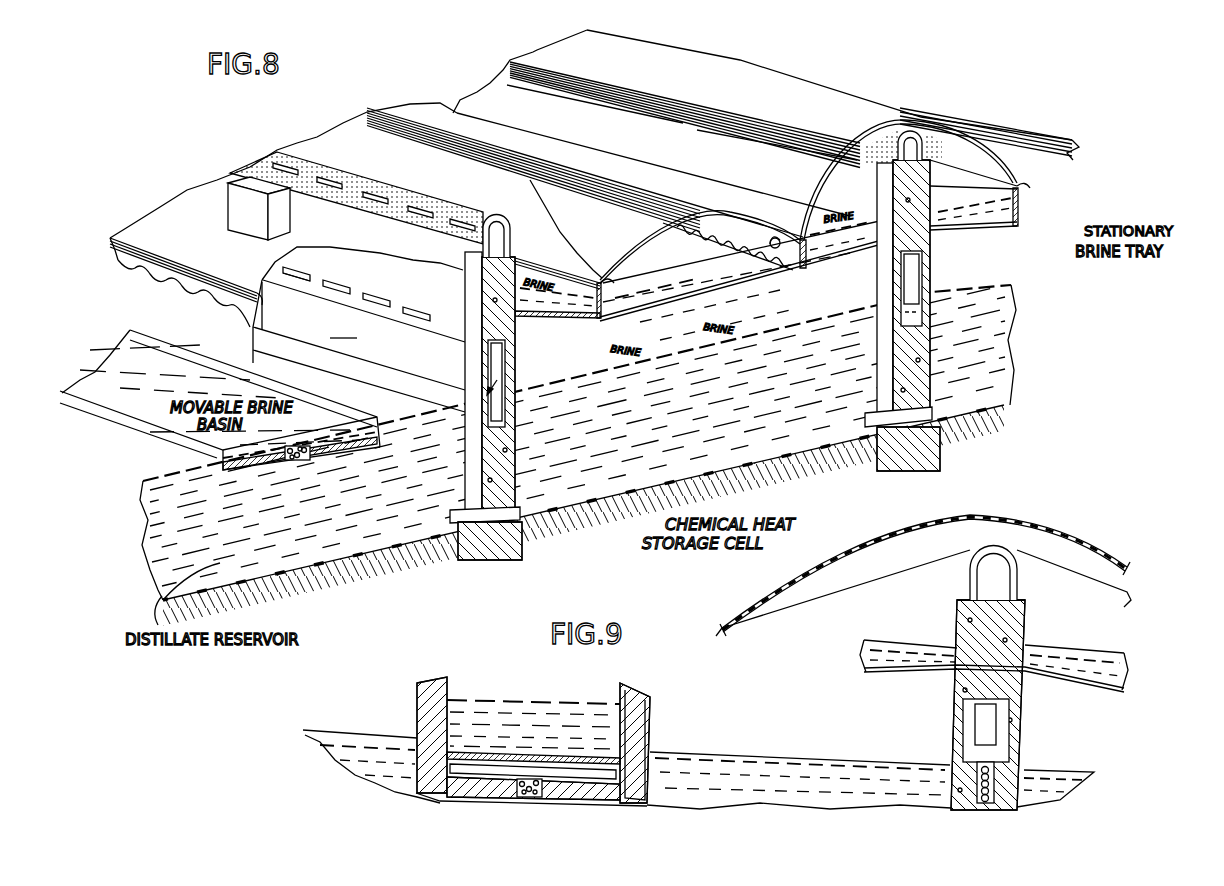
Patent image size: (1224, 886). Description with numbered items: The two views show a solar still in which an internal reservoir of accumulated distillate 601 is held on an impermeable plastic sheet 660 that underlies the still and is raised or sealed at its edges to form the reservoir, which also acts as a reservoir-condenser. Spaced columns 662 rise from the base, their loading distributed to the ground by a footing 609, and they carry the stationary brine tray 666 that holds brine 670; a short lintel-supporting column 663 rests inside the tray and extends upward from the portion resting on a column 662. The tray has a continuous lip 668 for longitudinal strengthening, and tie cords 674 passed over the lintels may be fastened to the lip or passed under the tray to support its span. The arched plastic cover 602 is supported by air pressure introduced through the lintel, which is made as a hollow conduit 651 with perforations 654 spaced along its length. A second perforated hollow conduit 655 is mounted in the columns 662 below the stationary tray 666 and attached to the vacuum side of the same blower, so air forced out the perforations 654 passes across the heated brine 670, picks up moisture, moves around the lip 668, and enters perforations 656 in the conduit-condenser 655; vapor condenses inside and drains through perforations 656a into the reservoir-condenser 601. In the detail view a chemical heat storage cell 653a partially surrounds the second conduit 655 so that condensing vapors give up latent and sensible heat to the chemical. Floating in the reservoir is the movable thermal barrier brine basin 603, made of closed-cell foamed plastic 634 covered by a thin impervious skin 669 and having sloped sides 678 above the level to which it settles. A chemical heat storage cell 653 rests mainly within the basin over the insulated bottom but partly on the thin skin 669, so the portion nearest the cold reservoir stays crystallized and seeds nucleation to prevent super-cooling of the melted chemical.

In FIG. 8, the reservoir-condenser 601 is at (363, 535).
In FIG. 9, the reservoir-condenser 601 is at (347, 753).
In FIG. 8, the cover 602 is at (750, 75).
In FIG. 9, the cover 602 is at (1030, 522).
In FIG. 8, the movable thermal barrier brine basin 603 is at (380, 444).
In FIG. 9, the movable thermal barrier brine basin 603 is at (652, 702).
In FIG. 8, the footing 609 is at (470, 558).
In FIG. 9, the foamed plastic 634 is at (650, 727).
In FIG. 8, the hollow lintel-conduit 651 is at (925, 150).
In FIG. 9, the hollow lintel-conduit 651 is at (968, 572).
In FIG. 8, the chemical heat storage cell 653 is at (285, 468).
In FIG. 9, the chemical heat storage cell 653 is at (616, 774).
In FIG. 9, the chemical heat storage cell 653a is at (952, 722).
In FIG. 8, the perforations 654 is at (893, 134).
In FIG. 8, the second perforated hollow conduit 655 is at (510, 364).
In FIG. 9, the second perforated hollow conduit 655 is at (986, 715).
In FIG. 8, the perforations 656 is at (422, 300).
In FIG. 8, the perforations 656a is at (926, 325).
In FIG. 8, the plastic sheet 660 is at (303, 584).
In FIG. 8, the columns 662 is at (918, 368).
In FIG. 9, the columns 662 is at (1010, 683).
In FIG. 9, the short lintel-supporting column 663 is at (957, 615).
In FIG. 8, the stationary brine tray 666 is at (1019, 229).
In FIG. 9, the stationary brine tray 666 is at (922, 673).
In FIG. 8, the lip 668 is at (797, 232).
In FIG. 8, the thin skin 669 is at (318, 463).
In FIG. 9, the thin skin 669 is at (413, 740).
In FIG. 8, the brine 670 is at (700, 316).
In FIG. 9, the brine 670 is at (534, 700).
In FIG. 8, the tie cords 674 is at (203, 240).
In FIG. 9, the tie cords 674 is at (1078, 580).
In FIG. 9, the sloped sides 678 is at (430, 678).